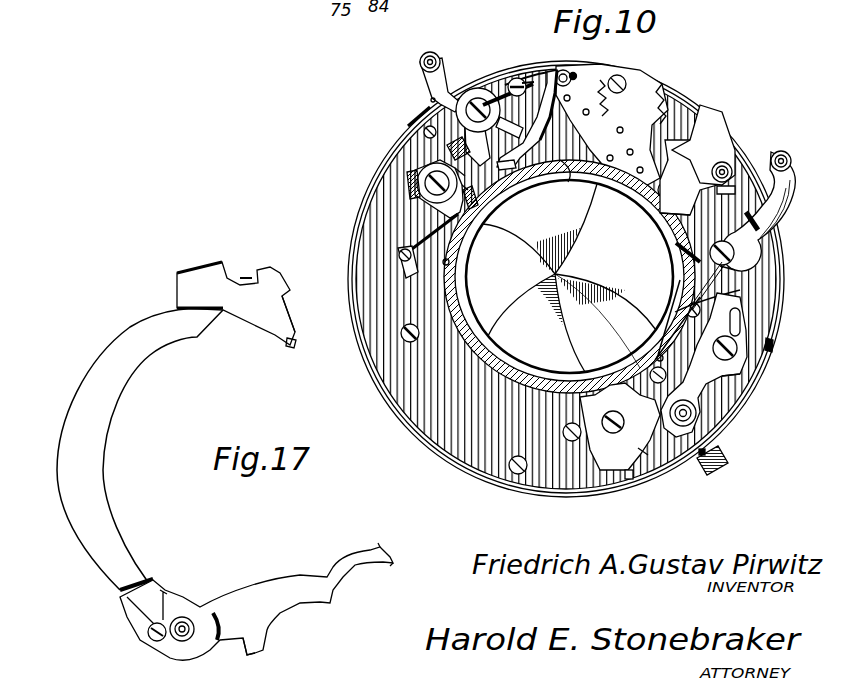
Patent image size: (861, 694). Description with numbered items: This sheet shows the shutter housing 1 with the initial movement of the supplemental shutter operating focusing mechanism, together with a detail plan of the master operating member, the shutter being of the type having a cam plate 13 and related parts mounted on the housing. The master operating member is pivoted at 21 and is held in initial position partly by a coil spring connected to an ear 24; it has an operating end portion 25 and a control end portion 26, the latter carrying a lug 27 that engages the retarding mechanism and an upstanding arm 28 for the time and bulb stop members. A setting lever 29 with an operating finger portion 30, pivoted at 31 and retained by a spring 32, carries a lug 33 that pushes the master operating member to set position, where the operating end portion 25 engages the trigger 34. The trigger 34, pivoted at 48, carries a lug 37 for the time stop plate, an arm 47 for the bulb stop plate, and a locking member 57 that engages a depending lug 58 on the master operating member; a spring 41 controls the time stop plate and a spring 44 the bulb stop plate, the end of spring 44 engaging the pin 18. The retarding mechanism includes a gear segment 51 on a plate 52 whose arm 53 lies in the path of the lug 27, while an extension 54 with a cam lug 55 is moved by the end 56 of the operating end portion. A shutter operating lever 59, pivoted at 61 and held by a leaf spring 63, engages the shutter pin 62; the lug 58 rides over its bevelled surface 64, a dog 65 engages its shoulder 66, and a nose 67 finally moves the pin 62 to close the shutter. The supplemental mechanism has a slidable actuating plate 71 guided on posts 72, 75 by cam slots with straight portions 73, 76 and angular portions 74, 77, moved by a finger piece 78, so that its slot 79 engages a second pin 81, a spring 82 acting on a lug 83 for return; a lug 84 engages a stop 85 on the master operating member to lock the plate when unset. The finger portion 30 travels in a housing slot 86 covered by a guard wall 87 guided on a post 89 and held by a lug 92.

In FIG. 10, the shutter housing disc 1 is at (400, 425).
In FIG. 10, the cover plate 13 is at (656, 166).
In FIG. 10, the pin 18 is at (582, 62).
In FIG. 10, the pivot 21 is at (696, 414).
In FIG. 17, the pivot 21 is at (186, 622).
In FIG. 17, the ear 24 is at (252, 655).
In FIG. 17, the operating end portion 25 is at (118, 333).
In FIG. 17, the control end portion 26 is at (327, 608).
In FIG. 17, the lug 27 is at (380, 544).
In FIG. 17, the upstanding arm 28 is at (393, 565).
In FIG. 10, the setting lever 29 is at (742, 256).
In FIG. 10, the operating finger portion 30 is at (780, 208).
In FIG. 10, the pivot 31 is at (727, 262).
In FIG. 10, the spring 32 is at (700, 275).
In FIG. 10, the lug 33 is at (676, 246).
In FIG. 10, the trigger 34 is at (476, 92).
In FIG. 10, the lug 37 is at (445, 76).
In FIG. 10, the spring 41 is at (433, 100).
In FIG. 10, the spring 44 is at (535, 72).
In FIG. 10, the arm 47 is at (522, 170).
In FIG. 10, the pivot 48 is at (500, 96).
In FIG. 10, the gear segment 51 is at (672, 118).
In FIG. 10, the plate 52 is at (722, 165).
In FIG. 10, the arm 53 is at (660, 212).
In FIG. 10, the extension 54 is at (580, 182).
In FIG. 10, the cam lug 55 is at (505, 172).
In FIG. 17, the end 56 is at (282, 318).
In FIG. 10, the locking member 57 is at (424, 128).
In FIG. 17, the depending lug 58 is at (290, 284).
In FIG. 10, the shutter operating lever 59 is at (460, 210).
In FIG. 10, the pivot 61 is at (458, 180).
In FIG. 10, the shutter member or pin 62 is at (470, 240).
In FIG. 10, the leaf spring 63 is at (435, 232).
In FIG. 10, the bevelled surface 64 is at (408, 183).
In FIG. 17, the dog 65 is at (250, 272).
In FIG. 10, the shoulder 66 is at (455, 168).
In FIG. 17, the nose 67 is at (284, 345).
In FIG. 10, the slidable actuating plate 71 is at (720, 390).
In FIG. 10, the post 72 is at (730, 353).
In FIG. 10, the straight elongated portion 73 is at (741, 325).
In FIG. 10, the short angularly arranged portion 74 is at (740, 364).
In FIG. 10, the post 75 is at (612, 435).
In FIG. 10, the straight elongated portion 76 is at (643, 454).
In FIG. 10, the short angularly arranged portion 77 is at (605, 440).
In FIG. 10, the extension 78 is at (704, 470).
In FIG. 10, the slot 79 is at (574, 360).
In FIG. 10, the second shutter member or pin 81 is at (630, 358).
In FIG. 10, the spring 82 is at (660, 332).
In FIG. 10, the lug 83 is at (727, 297).
In FIG. 10, the lug 84 is at (629, 480).
In FIG. 17, the stop 85 is at (122, 612).
In FIG. 10, the slot 86 is at (778, 244).
In FIG. 10, the wall 87 is at (785, 225).
In FIG. 10, the post 89 is at (774, 345).
In FIG. 10, the lug 92 is at (752, 190).